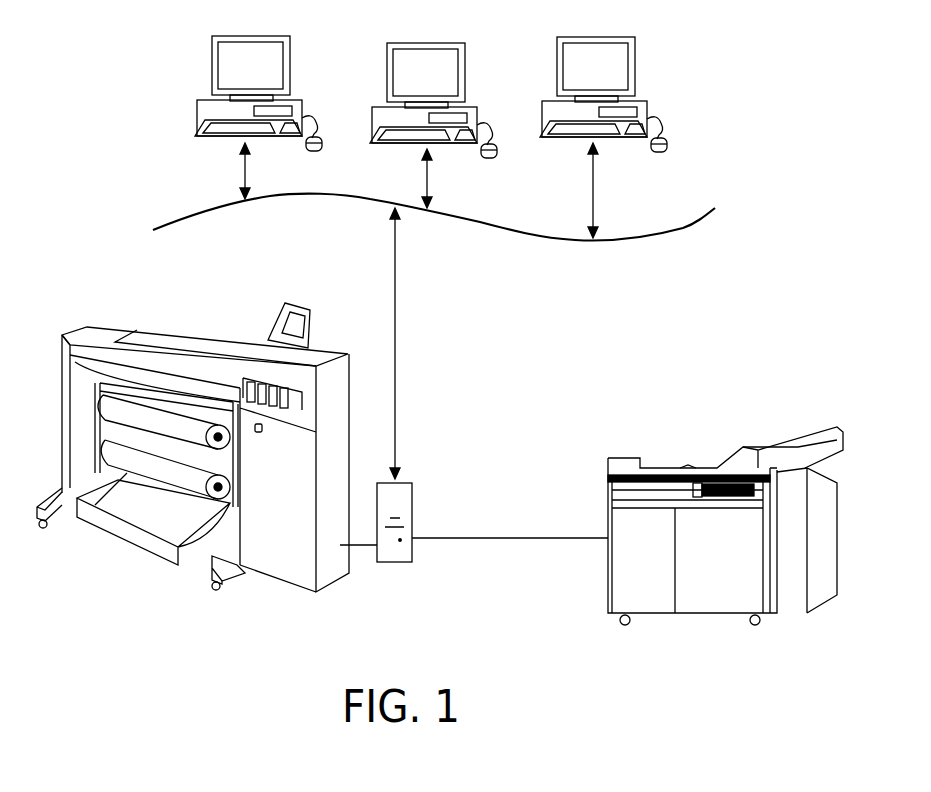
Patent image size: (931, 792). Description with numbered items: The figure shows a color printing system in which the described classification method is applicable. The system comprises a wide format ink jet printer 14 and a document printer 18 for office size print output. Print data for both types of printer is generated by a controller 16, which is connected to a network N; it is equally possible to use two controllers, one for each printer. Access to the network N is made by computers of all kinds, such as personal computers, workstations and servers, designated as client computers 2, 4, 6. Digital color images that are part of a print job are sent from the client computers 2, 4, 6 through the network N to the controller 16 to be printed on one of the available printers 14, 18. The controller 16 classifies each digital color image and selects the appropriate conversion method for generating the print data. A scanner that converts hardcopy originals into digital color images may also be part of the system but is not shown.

The client computer 2 is at (300, 84).
The client computer 4 is at (475, 88).
The client computer 6 is at (641, 86).
The network N is at (703, 226).
The wide format ink jet printer 14 is at (335, 380).
The controller 16 is at (399, 562).
The document printer 18 is at (622, 458).